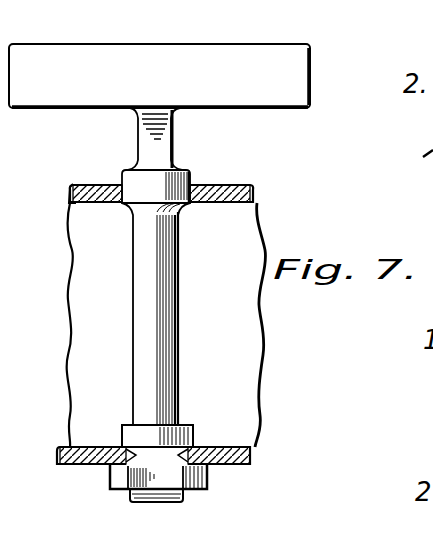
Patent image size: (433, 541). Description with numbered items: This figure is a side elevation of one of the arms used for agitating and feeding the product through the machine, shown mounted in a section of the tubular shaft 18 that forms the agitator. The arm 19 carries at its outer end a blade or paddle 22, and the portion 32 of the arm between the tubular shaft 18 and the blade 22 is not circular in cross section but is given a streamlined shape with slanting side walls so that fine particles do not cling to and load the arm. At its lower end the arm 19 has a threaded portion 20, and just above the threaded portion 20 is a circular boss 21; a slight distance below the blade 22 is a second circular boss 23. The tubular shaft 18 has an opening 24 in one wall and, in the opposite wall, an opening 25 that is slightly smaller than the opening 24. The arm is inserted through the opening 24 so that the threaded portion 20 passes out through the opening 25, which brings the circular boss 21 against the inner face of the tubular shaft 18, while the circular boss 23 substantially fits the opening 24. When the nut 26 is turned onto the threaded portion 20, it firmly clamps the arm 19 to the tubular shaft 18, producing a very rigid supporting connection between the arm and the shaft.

The tubular shaft 18 is at (236, 186).
The arm 19 is at (143, 280).
The threaded portion 20 is at (148, 499).
The circular boss 21 is at (175, 432).
The blade 22 is at (165, 31).
The circular boss 23 is at (183, 175).
The opening 24 is at (98, 170).
The opening 25 is at (254, 453).
The nut 26 is at (110, 479).
The shank portion 32 is at (143, 135).